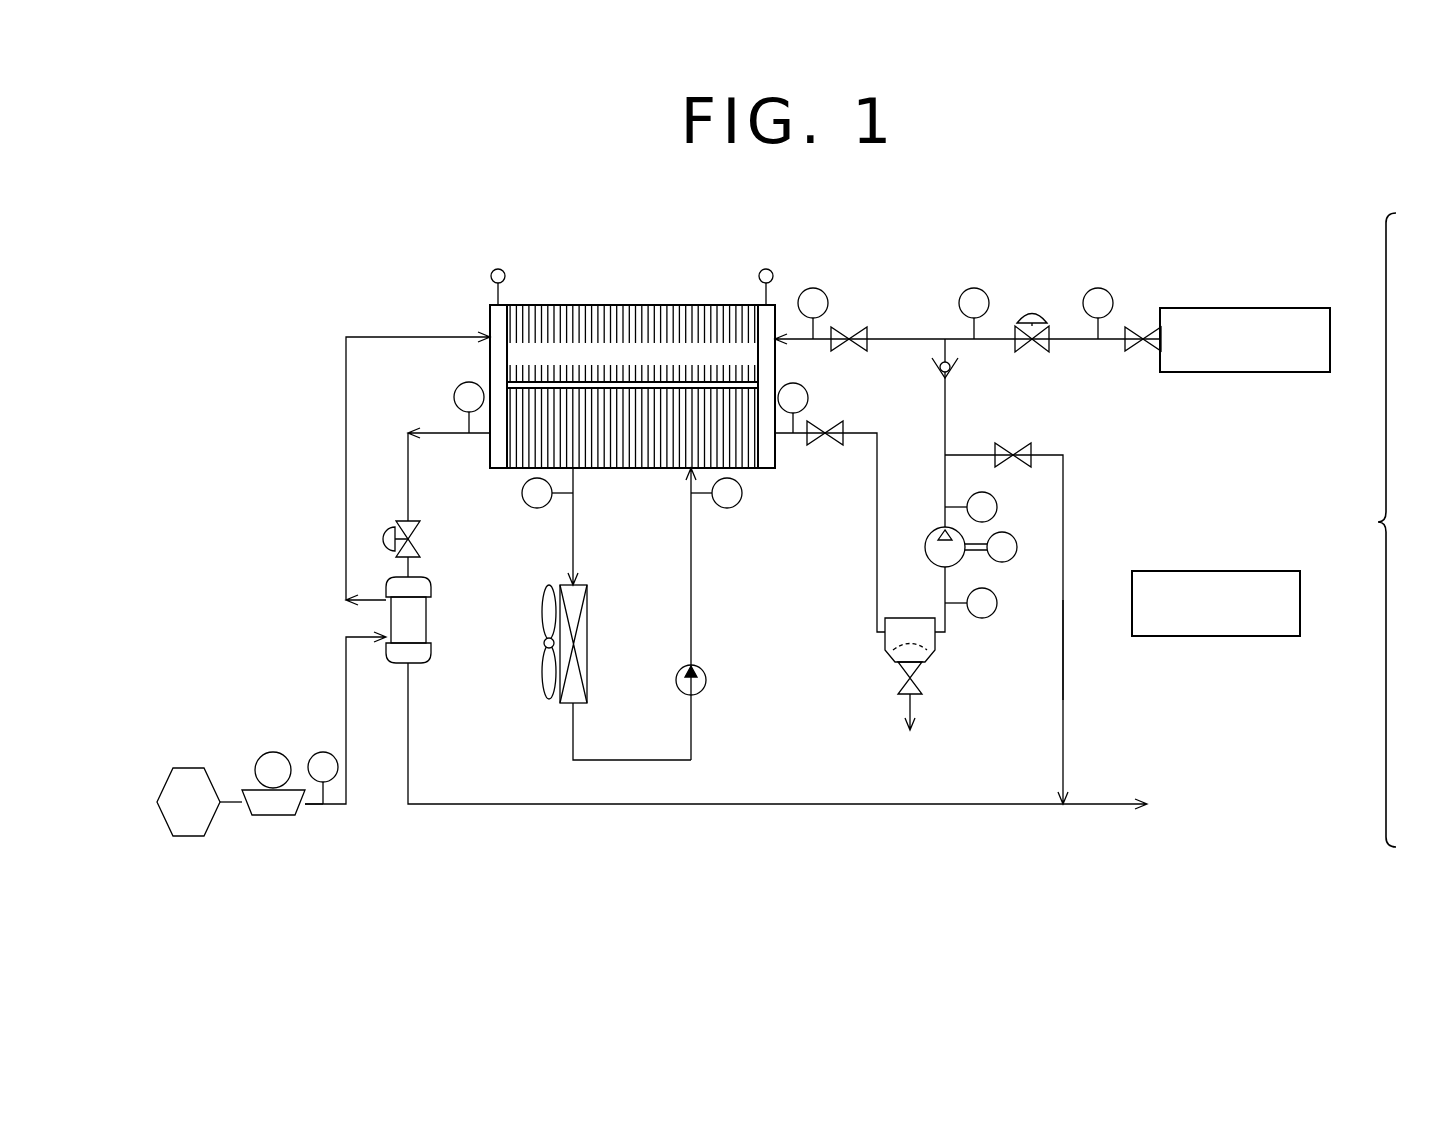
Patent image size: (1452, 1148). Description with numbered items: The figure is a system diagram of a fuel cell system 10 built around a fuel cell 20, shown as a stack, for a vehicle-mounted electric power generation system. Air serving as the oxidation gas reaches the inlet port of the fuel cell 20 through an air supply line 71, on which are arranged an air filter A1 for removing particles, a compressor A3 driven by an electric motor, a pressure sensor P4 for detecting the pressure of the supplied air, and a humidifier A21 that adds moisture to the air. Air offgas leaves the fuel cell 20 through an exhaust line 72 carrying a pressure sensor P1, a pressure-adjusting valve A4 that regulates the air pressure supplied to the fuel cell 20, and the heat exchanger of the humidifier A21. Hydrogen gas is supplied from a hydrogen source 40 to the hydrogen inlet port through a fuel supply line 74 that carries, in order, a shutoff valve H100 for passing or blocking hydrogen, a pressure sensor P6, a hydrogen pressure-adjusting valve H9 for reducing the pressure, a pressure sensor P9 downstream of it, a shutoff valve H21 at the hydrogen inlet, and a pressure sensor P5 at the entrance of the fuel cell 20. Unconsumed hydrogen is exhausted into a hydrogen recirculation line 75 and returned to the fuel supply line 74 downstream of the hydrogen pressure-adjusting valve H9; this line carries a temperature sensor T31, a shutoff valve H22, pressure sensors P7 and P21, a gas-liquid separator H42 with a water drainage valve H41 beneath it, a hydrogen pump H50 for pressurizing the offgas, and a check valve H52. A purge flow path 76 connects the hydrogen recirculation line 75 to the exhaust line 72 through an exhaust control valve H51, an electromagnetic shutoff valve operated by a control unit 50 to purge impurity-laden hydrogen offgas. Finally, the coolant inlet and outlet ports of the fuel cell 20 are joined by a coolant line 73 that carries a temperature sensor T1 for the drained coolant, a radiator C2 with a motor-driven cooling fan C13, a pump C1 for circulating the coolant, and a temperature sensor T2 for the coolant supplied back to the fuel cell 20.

The fuel cell system 10 is at (1398, 540).
The fuel cell 20 is at (690, 305).
The hydrogen source 40 is at (1290, 308).
The control unit 50 is at (1262, 571).
The air supply line 71 is at (346, 530).
The exhaust line 72 is at (830, 804).
The coolant line 73 is at (691, 603).
The fuel supply line 74 is at (918, 339).
The hydrogen recirculation line 75 is at (877, 555).
The purge flow path 76 is at (1063, 537).
The air filter A1 is at (199, 802).
The compressor A3 is at (282, 784).
The pressure-adjusting valve A4 is at (393, 532).
The humidifier A21 is at (437, 620).
The pressure sensor P1 is at (470, 391).
The pressure sensor P4 is at (323, 762).
The pressure sensor P5 is at (813, 297).
The pressure sensor P6 is at (1098, 297).
The pressure sensor P7 is at (971, 492).
The pressure sensor P9 is at (974, 297).
The pressure sensor P21 is at (981, 590).
The temperature sensor T1 is at (528, 493).
The temperature sensor T2 is at (737, 493).
The temperature sensor T31 is at (806, 392).
The pump C1 is at (668, 680).
The radiator C2 is at (597, 644).
The cooling fan C13 is at (521, 642).
The hydrogen pressure-adjusting valve H9 is at (1034, 318).
The shutoff valve H21 is at (861, 320).
The shutoff valve H22 is at (839, 415).
The water drainage valve H41 is at (883, 696).
The gas-liquid separator H42 is at (910, 626).
The hydrogen pump H50 is at (949, 531).
The exhaust control valve H51 is at (1006, 604).
The check valve H52 is at (916, 485).
The shutoff valve H100 is at (1121, 358).